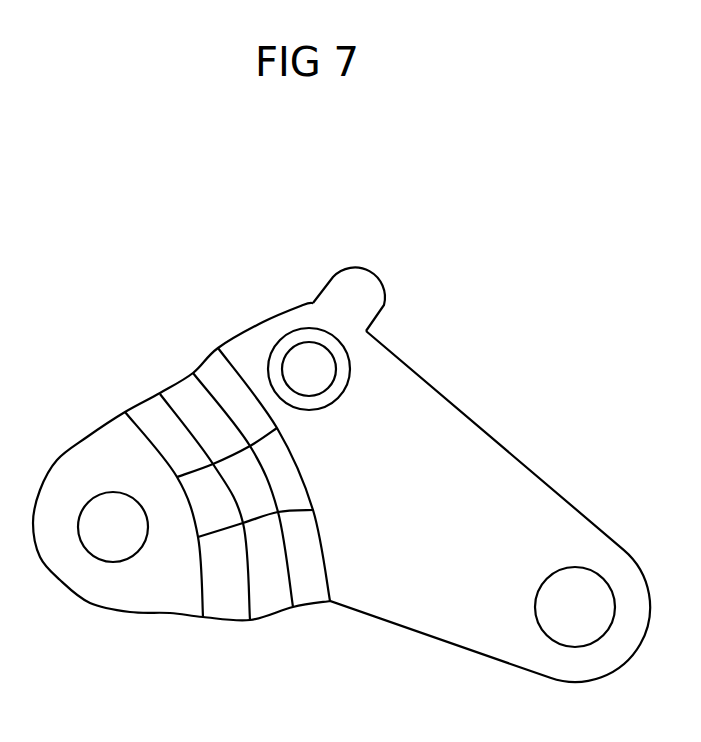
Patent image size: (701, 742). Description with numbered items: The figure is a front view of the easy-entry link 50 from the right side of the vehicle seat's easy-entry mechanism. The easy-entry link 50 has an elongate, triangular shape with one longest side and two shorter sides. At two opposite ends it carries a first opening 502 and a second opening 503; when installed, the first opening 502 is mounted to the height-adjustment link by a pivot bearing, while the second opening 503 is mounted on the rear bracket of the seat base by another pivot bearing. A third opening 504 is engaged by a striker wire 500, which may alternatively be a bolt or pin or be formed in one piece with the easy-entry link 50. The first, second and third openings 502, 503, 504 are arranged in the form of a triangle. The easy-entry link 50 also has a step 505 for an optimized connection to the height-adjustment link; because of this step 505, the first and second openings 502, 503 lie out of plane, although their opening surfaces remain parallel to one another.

The easy-entry link 50 is at (482, 457).
The striker wire 500 is at (380, 283).
The first opening 502 is at (98, 510).
The second opening 503 is at (582, 598).
The third opening 504 is at (277, 340).
The step 505 is at (165, 368).